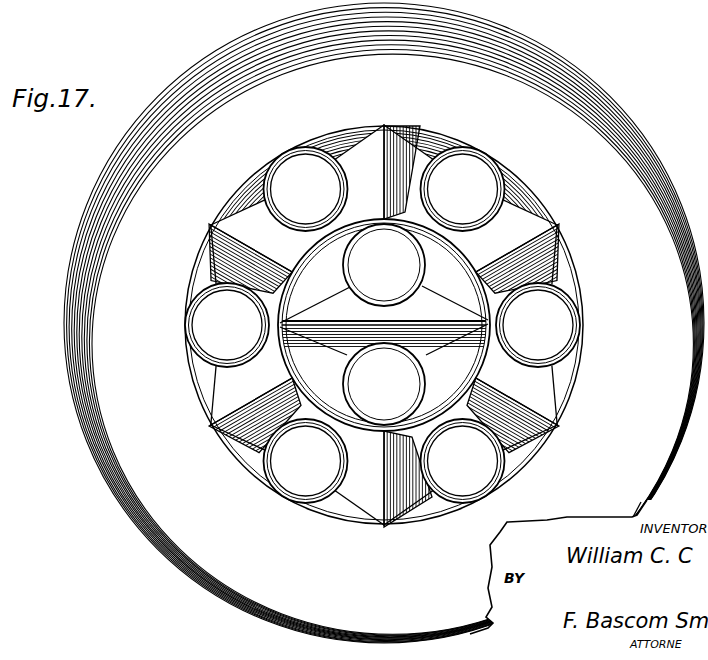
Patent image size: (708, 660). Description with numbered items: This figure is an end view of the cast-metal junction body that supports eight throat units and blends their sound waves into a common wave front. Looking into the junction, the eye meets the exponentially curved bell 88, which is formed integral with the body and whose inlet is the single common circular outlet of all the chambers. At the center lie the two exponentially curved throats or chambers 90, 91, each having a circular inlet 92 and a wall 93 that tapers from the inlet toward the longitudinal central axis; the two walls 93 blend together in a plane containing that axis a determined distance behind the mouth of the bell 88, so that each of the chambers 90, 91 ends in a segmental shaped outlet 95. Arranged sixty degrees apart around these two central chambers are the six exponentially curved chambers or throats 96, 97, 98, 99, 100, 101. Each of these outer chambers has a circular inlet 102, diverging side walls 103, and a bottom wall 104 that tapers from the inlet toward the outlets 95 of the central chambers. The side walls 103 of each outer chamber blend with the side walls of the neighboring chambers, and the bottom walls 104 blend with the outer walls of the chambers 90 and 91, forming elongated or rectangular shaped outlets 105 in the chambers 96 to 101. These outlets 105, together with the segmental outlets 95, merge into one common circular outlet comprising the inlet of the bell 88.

The exponentially curved bell 88 is at (640, 140).
The exponentially curved throat or chamber 90 is at (427, 262).
The exponentially curved throat or chamber 91 is at (462, 356).
The circular inlet 92 is at (368, 288).
The wall 93 is at (410, 332).
The segmental shaped outlets 95 is at (311, 258).
The exponentially curved chamber or throat 96 is at (352, 128).
The exponentially curved chamber or throat 97 is at (198, 260).
The exponentially curved chamber or throat 98 is at (362, 517).
The exponentially curved chamber or throat 99 is at (424, 513).
The exponentially curved chamber or throat 100 is at (576, 386).
The exponentially curved chamber or throat 101 is at (538, 200).
The circular inlet 102 is at (483, 153).
The diverging side walls 103 is at (384, 124).
The bottom wall 104 is at (383, 212).
The elongated or rectangular shaped outlets 105 is at (261, 170).